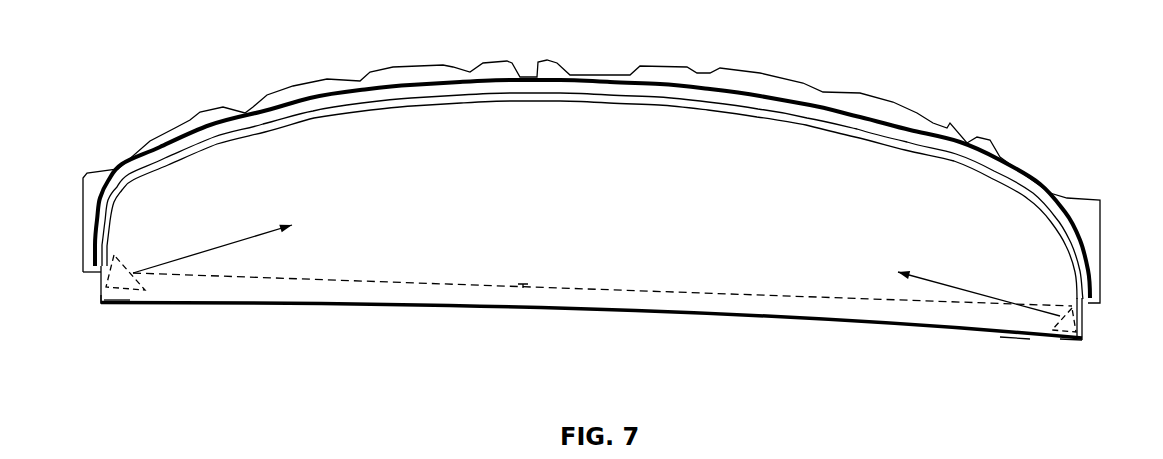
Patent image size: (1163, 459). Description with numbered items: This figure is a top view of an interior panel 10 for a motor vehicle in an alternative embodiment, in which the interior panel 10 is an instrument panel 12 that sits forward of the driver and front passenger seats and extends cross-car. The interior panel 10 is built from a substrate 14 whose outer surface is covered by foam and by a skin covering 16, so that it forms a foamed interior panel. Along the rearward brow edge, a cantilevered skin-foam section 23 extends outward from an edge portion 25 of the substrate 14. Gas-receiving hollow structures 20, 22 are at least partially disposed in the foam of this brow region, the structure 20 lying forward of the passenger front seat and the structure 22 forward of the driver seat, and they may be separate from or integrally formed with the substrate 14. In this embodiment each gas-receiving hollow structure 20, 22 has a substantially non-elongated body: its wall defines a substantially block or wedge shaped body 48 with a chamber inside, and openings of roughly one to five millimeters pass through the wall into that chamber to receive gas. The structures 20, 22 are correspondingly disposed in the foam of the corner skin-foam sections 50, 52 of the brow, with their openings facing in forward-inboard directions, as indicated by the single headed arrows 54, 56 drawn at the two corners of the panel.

The interior panel 10 is at (962, 43).
The instrument panel 12 is at (1010, 99).
The substrate 14 is at (890, 300).
The skin covering 16 is at (313, 150).
The gas-receiving hollow structure 20 is at (1067, 340).
The gas-receiving hollow structure 22 is at (127, 293).
The cantilevered skin-foam section 23 is at (530, 302).
The edge portion 25 is at (483, 283).
The block/wedge shaped body 48 is at (102, 283).
The corner skin-foam section 50 is at (1023, 340).
The corner skin-foam section 52 is at (108, 305).
The single headed arrow 54 is at (933, 273).
The single headed arrow 56 is at (240, 240).